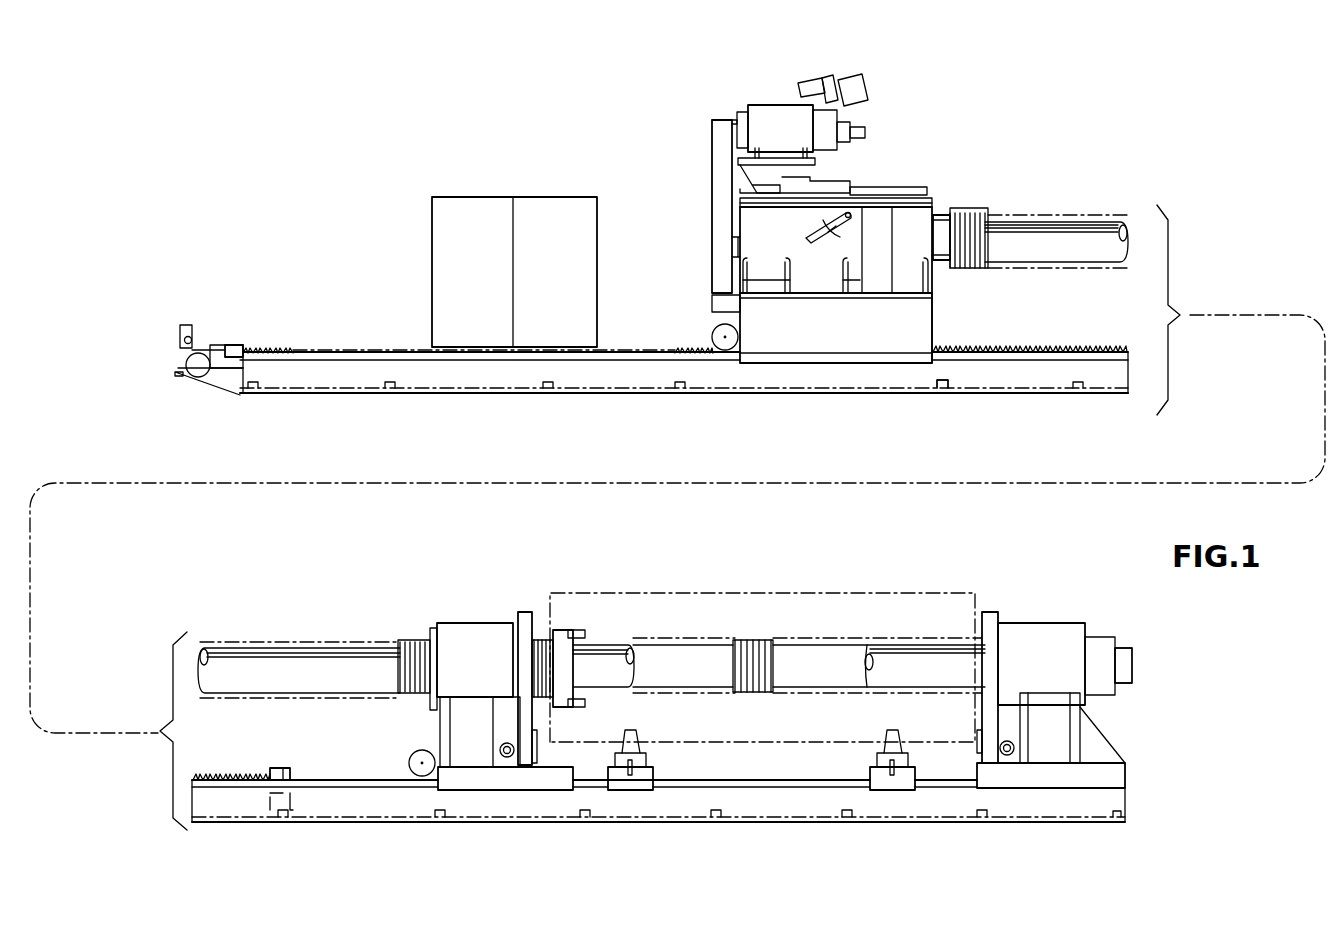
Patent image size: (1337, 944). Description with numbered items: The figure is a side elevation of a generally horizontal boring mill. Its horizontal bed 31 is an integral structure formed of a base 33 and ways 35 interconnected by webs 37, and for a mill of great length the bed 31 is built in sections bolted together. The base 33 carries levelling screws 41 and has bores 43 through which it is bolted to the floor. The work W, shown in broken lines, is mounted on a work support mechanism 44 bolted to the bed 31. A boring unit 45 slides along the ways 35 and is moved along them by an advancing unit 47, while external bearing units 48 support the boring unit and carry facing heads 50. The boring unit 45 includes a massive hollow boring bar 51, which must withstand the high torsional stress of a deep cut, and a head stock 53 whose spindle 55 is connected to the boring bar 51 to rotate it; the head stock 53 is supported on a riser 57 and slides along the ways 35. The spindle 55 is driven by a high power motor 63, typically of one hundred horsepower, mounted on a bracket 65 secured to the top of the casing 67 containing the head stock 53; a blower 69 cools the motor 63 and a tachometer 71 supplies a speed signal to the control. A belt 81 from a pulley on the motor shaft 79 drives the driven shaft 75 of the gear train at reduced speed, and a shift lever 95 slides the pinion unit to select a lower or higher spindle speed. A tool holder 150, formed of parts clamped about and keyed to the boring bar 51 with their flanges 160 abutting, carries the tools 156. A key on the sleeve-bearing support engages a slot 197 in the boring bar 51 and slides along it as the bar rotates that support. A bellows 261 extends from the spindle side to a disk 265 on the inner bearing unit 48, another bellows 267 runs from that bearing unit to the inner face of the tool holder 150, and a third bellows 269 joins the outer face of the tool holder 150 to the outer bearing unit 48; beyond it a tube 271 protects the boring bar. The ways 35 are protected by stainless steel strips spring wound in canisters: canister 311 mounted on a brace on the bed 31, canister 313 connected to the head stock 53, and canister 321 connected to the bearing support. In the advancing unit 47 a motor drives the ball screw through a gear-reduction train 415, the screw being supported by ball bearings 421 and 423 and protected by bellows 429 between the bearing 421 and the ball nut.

The bed 31 is at (612, 398).
The base 33 is at (585, 388).
The ways 35 is at (637, 358).
The webs 37 is at (708, 390).
The levelling screws 41 is at (950, 386).
The bores 43 is at (267, 800).
The work support mechanism 44 is at (645, 758).
The boring unit 45 is at (852, 330).
The advancing unit 47 is at (326, 341).
The external bearing units 48 is at (778, 686).
The facing heads 50 is at (507, 660).
The boring bar 51 is at (1093, 258).
The head stock 53 is at (785, 231).
The spindle 55 is at (942, 222).
The riser 57 is at (927, 322).
The motor 63 is at (792, 129).
The bracket 65 is at (815, 161).
The casing 67 is at (926, 196).
The blower 69 is at (858, 84).
The tachometer 71 is at (848, 123).
The driven shaft 75 is at (740, 245).
The shaft 79 is at (712, 120).
The belt 81 is at (712, 147).
The shift lever 95 is at (823, 234).
The tool holder 150 is at (563, 630).
The tools 156 is at (588, 634).
The flange 160 is at (574, 674).
The slot 197 is at (1055, 230).
The bellows 261 is at (968, 220).
The disk 265 is at (430, 624).
The bellows 267 is at (532, 622).
The third bellows 269 is at (758, 640).
The tube 271 is at (1108, 690).
The canister 311 is at (198, 372).
The canister 313 is at (713, 328).
The canister 321 is at (424, 750).
The gear-reduction train 415 is at (180, 356).
The ball bearing 421 is at (240, 344).
The ball bearing 423 is at (280, 767).
The bellows 429 is at (273, 347).
The work W is at (875, 592).